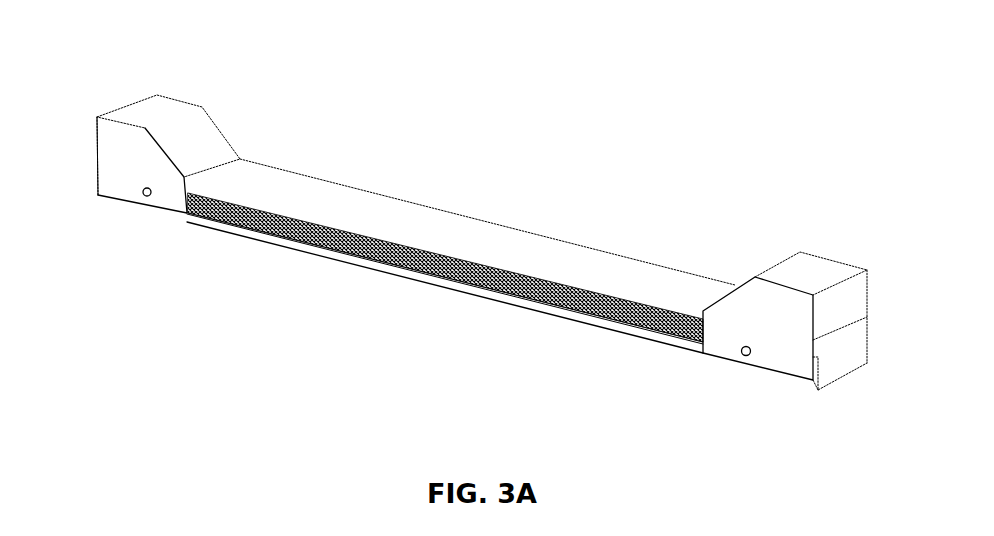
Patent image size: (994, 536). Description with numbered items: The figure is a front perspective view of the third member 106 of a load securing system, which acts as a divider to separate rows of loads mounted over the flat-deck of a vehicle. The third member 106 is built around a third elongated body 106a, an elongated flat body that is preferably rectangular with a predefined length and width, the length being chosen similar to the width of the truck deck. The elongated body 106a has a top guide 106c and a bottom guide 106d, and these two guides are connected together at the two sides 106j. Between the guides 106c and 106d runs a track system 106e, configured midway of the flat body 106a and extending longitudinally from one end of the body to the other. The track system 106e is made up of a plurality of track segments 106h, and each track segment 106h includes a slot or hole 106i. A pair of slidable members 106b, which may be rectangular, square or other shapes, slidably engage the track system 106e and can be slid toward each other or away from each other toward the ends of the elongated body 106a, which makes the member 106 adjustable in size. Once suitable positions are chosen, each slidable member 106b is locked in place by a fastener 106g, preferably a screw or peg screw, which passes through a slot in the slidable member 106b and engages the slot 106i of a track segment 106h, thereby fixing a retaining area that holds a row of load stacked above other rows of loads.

The third member 106 is at (465, 235).
The third elongated body 106a is at (461, 261).
The slidable members 106b is at (180, 134).
The top guide 106c is at (440, 232).
The bottom guide 106d is at (467, 293).
The track system 106e is at (340, 250).
The fastener 106g is at (142, 196).
The track segments 106h is at (335, 247).
The slot or hole 106i is at (380, 240).
The sides 106j is at (98, 176).